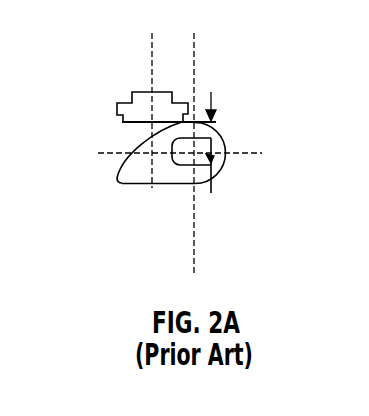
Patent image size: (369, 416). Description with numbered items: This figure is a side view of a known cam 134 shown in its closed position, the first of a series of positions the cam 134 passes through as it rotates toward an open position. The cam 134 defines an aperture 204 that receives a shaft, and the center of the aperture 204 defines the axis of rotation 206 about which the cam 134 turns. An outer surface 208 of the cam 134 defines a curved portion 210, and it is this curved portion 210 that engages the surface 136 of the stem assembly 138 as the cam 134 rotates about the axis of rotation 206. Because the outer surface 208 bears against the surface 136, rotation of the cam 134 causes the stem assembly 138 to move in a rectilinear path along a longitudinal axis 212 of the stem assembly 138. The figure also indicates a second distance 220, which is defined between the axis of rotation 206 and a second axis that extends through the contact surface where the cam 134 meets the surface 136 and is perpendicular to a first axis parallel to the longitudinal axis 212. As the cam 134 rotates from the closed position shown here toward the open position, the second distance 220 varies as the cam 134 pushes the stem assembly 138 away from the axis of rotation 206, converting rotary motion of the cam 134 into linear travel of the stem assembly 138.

The longitudinal axis 212 is at (152, 47).
The stem assembly 138 is at (143, 92).
The surface 136 is at (133, 122).
The curved portion 210 is at (140, 143).
The cam 134 is at (131, 183).
The aperture 204 is at (184, 165).
The axis of rotation 206 is at (197, 151).
The outer surface 208 is at (225, 177).
The second distance 220 is at (211, 94).